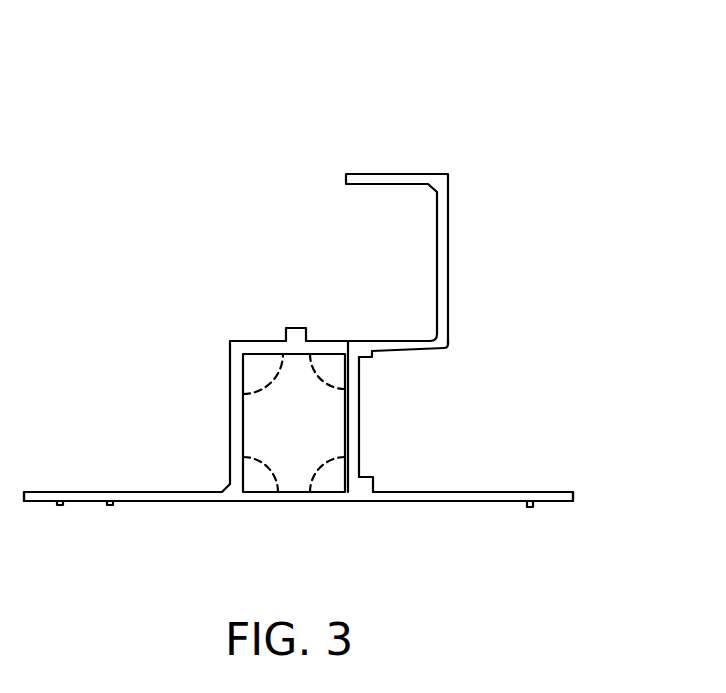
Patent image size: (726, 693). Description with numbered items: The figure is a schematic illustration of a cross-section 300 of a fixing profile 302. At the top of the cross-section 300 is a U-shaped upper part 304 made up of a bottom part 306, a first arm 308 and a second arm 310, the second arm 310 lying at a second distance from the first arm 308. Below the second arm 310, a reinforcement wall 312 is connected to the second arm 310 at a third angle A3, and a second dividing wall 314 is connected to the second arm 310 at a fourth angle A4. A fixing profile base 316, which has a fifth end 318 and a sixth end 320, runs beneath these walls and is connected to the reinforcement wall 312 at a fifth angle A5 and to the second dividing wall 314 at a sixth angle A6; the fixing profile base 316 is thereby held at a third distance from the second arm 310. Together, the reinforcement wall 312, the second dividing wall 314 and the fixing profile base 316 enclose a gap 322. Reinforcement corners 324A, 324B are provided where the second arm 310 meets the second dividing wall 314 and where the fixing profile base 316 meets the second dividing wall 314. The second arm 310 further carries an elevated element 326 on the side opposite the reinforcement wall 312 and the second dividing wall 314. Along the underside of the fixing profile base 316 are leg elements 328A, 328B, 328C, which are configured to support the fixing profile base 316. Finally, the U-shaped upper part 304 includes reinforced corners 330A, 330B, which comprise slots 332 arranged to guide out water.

The cross-section 300 is at (453, 125).
The fixing profile 302 is at (596, 99).
The U-shaped upper part 304 is at (478, 256).
The bottom part 306 is at (440, 228).
The first arm 308 is at (390, 176).
The second arm 310 is at (250, 347).
The reinforcement wall 312 is at (228, 433).
The second dividing wall 314 is at (358, 453).
The fixing profile base 316 is at (427, 493).
The fifth end 318 is at (552, 495).
The sixth end 320 is at (35, 493).
The gap 322 is at (298, 480).
The reinforcement corner 324A is at (400, 354).
The reinforcement corner 324B is at (366, 487).
The elevated element 326 is at (292, 328).
The leg element 328A is at (60, 505).
The leg element 328B is at (109, 505).
The leg element 328C is at (531, 507).
The reinforced corner 330A is at (433, 340).
The reinforced corner 330B is at (455, 178).
The slots 332 is at (448, 342).
The third angle A3 is at (253, 375).
The fourth angle A4 is at (338, 363).
The fifth angle A5 is at (258, 481).
The sixth angle A6 is at (333, 482).